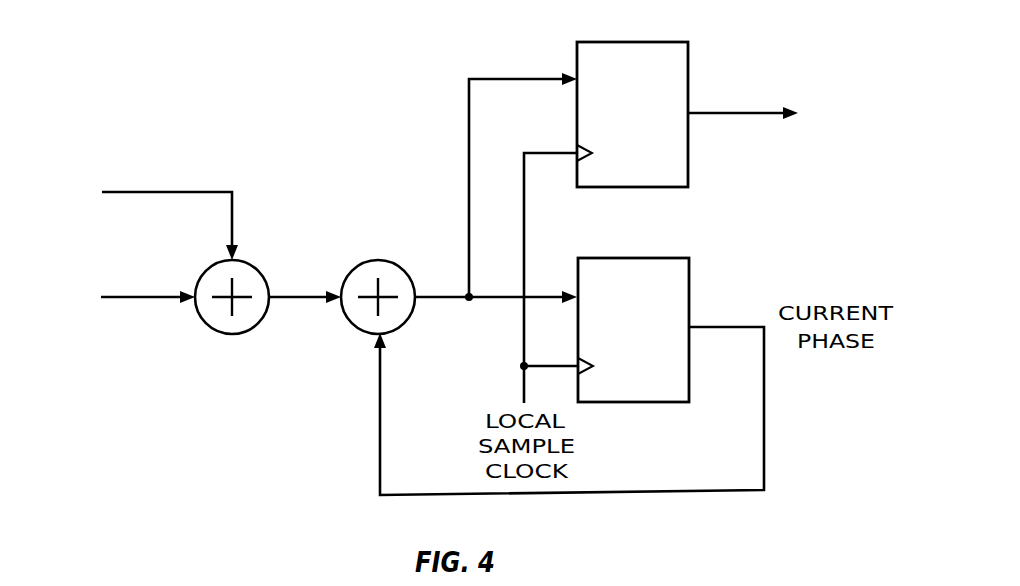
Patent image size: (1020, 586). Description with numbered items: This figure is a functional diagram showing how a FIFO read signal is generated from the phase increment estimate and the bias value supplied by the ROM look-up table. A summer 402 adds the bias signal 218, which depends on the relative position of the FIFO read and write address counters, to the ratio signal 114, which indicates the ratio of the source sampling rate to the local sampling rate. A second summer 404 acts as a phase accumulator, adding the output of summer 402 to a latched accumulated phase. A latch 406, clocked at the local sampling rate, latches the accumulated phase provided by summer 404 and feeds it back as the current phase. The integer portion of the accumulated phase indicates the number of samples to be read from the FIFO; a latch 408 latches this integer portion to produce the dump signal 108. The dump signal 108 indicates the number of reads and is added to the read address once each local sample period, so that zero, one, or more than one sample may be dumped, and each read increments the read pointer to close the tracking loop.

The bias signal 218 is at (152, 191).
The ratio input signal 114 is at (133, 296).
The summer 402 is at (275, 263).
The summer 404 is at (421, 260).
The latch 408 is at (626, 40).
The latch 406 is at (628, 258).
The dump signal 108 is at (727, 111).